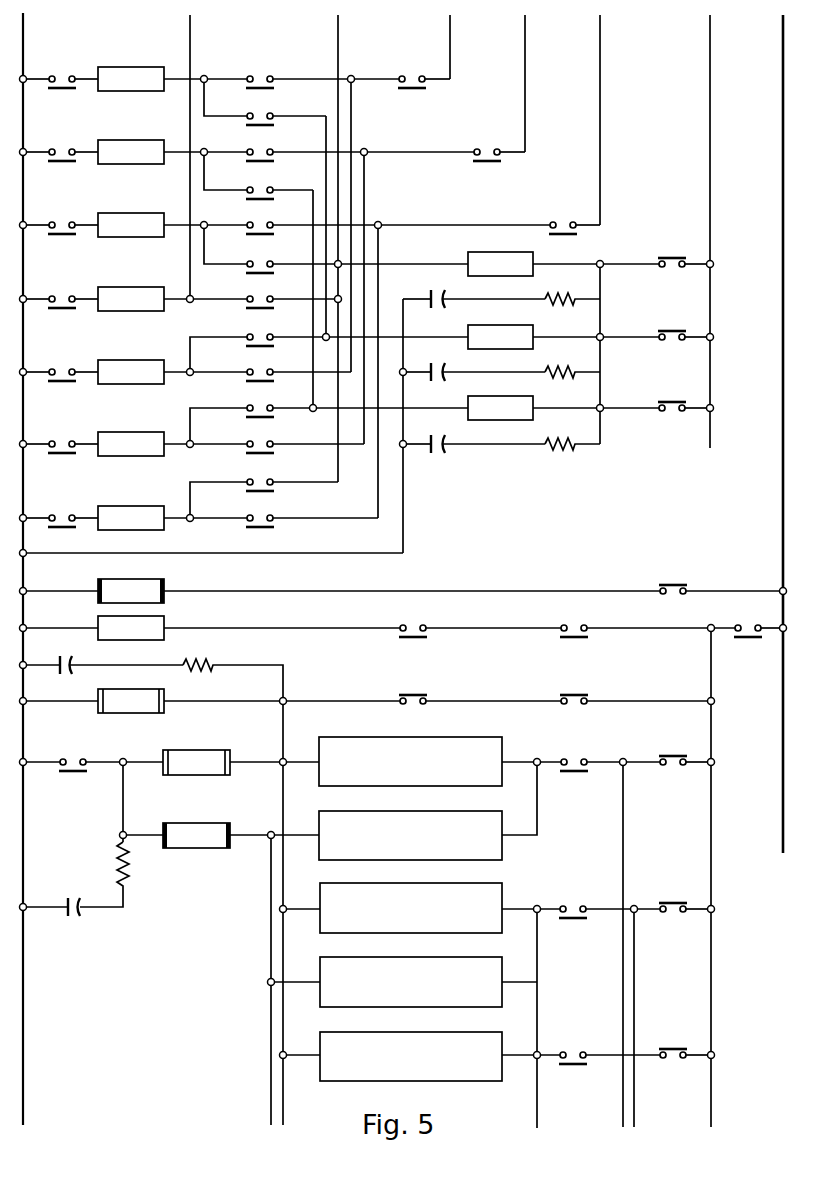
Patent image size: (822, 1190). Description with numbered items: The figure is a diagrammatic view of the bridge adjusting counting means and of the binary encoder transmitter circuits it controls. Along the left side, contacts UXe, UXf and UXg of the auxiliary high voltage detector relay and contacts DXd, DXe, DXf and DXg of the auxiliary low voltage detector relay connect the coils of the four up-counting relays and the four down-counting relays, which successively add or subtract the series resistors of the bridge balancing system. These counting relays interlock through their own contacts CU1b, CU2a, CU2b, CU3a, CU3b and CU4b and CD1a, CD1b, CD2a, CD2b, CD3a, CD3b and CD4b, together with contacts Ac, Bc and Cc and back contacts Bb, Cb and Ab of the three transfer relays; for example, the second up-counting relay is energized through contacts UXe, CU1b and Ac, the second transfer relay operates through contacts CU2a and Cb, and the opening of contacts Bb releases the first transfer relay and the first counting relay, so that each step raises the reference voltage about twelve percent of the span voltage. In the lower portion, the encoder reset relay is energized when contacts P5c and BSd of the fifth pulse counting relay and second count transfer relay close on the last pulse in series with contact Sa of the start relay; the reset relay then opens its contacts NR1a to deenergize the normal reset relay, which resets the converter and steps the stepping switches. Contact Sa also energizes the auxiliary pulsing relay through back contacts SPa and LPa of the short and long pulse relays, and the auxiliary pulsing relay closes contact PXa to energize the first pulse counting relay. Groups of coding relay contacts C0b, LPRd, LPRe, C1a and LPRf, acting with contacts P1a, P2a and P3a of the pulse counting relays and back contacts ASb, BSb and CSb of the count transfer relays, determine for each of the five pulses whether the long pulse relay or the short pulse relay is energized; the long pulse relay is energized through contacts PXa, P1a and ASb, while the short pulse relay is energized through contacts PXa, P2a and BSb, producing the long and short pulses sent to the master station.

The contact UXe of auxiliary high voltage detector relay UXe is at (59, 80).
The contact UXf of auxiliary high voltage detector relay UXf is at (59, 153).
The contact UXg of auxiliary high voltage detector relay UXg is at (59, 226).
The contact DXd of relay DX DXd is at (59, 300).
The contact DXe of relay DX DXe is at (59, 373).
The contact DXf of relay DX DXf is at (59, 445).
The contact DXg of relay DX DXg is at (59, 519).
The contact CU1b of counting relay CU1 CU1b is at (257, 80).
The contact CU2a of counting relay CU2 CU2a is at (257, 117).
The contact CU2b is at (257, 153).
The contact CU3a of counting relay CU3 CU3a is at (257, 191).
The contact CU3b is at (257, 226).
The contact CU4b is at (257, 265).
The contact CD1a is at (257, 300).
The contact CD1b is at (257, 338).
The contact CD2a is at (257, 373).
The contact CD2b is at (257, 409).
The contact CD3a is at (257, 445).
The contact CD3b is at (257, 483).
The contact CD4b is at (257, 519).
The contact Ac of transfer relay A Ac is at (409, 80).
The contact Bc of relay B Bc is at (484, 153).
The contact Cc of relay C Cc is at (560, 226).
The contact Bb of transfer relay B Bb is at (666, 257).
The contact Cb of transfer relay C Cb is at (666, 330).
The back contact Ab of relay A Ab is at (666, 401).
The contact NR1a of encoder reset relay NR1a is at (667, 584).
The contact BSd of count transfer relay BS BSd is at (410, 629).
The contact P5c of pulse count relay P5 P5c is at (571, 629).
The contact Sa of start relay Sa is at (745, 629).
The contact LPa of long pulse relay LPa is at (407, 694).
The contact SPa of short pulse relay SPa is at (568, 694).
The contact PXa of auxiliary pulsing relay PXa is at (70, 763).
The contact group C4b-C8b LPRd is at (410, 761).
The contact group C0b-C3b C0b is at (410, 835).
The contact group C0c-C8c LPRe is at (411, 908).
The contact group C1a, C4c-C6c C1a is at (411, 982).
The contact group C0d-C6d LPRf is at (411, 1056).
The contact P1a of pulse count relay P1 P1a is at (571, 763).
The contact ASb of count transfer relay AS ASb is at (667, 755).
The contact P2a of pulse count relay P2 P2a is at (570, 910).
The contact BSb of count transfer relay BS BSb is at (667, 902).
The contact P3a is at (570, 1056).
The contact CSb of count transfer relay CS CSb is at (667, 1048).